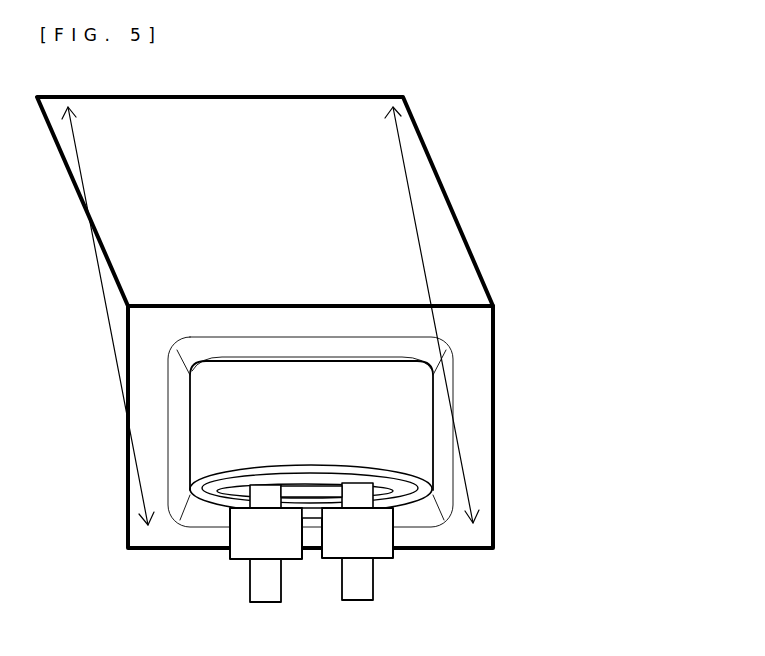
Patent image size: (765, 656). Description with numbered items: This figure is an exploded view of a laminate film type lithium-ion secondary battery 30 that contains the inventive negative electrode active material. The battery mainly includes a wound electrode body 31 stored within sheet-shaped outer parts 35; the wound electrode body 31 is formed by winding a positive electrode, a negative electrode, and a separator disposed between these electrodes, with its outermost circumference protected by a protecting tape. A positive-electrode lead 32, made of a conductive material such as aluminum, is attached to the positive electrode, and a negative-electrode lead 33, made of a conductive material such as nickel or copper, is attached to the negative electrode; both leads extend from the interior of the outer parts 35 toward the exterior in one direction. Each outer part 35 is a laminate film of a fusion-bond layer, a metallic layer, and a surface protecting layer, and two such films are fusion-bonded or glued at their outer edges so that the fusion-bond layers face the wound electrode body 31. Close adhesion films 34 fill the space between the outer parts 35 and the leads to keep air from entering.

The laminate film type lithium-ion secondary battery 30 is at (443, 113).
The wound electrode body 31 is at (393, 415).
The positive-electrode lead 32 is at (260, 588).
The negative-electrode lead 33 is at (356, 587).
The close adhesion film 34 is at (378, 538).
The outer part 35 is at (328, 208).